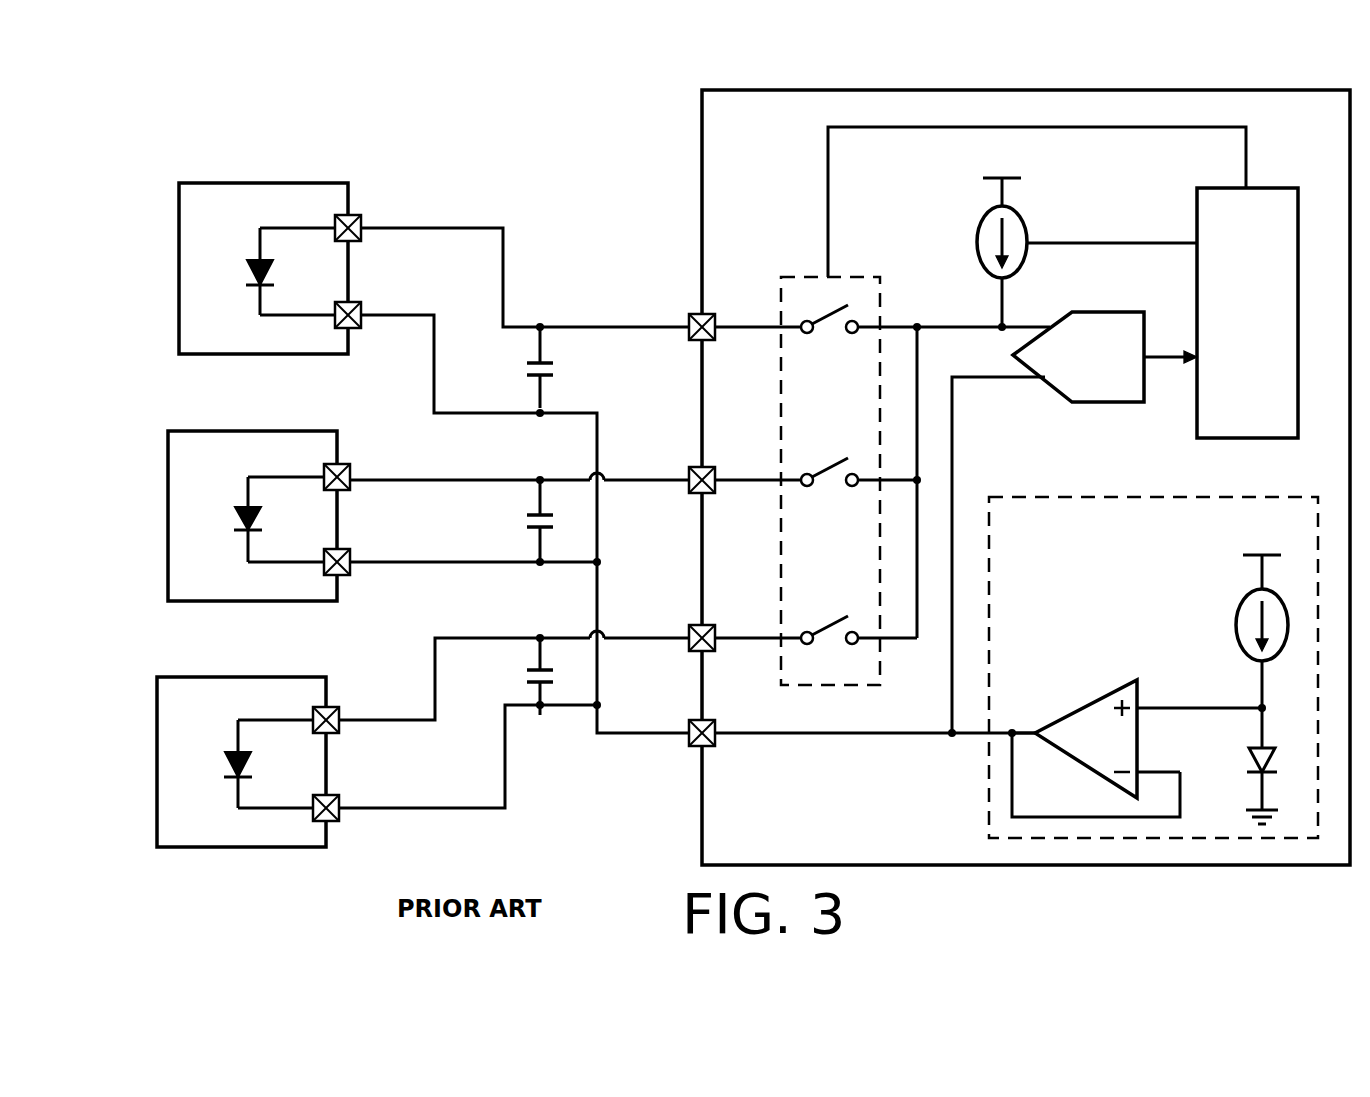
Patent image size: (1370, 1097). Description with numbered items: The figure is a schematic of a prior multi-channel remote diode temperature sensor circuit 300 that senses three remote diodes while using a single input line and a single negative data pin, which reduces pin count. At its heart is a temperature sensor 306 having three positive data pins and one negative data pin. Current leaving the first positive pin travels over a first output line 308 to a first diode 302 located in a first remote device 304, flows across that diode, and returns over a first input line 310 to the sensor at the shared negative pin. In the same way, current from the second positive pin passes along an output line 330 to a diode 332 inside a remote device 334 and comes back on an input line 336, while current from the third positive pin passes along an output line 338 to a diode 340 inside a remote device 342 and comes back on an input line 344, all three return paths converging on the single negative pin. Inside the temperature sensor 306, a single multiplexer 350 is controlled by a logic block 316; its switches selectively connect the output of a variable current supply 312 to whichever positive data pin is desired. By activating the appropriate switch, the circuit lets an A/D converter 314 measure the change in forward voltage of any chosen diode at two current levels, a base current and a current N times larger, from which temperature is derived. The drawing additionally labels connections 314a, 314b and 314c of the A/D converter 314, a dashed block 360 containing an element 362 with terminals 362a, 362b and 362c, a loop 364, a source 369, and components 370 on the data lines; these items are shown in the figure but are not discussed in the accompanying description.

The multi-channel temperature sensor circuit 300 is at (547, 96).
The first diode 302 is at (258, 262).
The first remote device 304 is at (270, 249).
The temperature sensor 306 is at (1124, 91).
The first output line 308 is at (376, 228).
The first input line 310 is at (386, 315).
The variable current supply 312 is at (988, 228).
The A/D converter 314 is at (1057, 500).
The A/D converter first input 314a is at (1050, 312).
The A/D converter second input 314b is at (1040, 383).
The A/D converter output 314c is at (1150, 352).
The logic block 316 is at (1222, 188).
The output line 330 is at (376, 478).
The diode 332 is at (246, 507).
The remote device 334 is at (259, 497).
The input line 336 is at (386, 562).
The output line 338 is at (360, 720).
The diode 340 is at (236, 752).
The remote device 342 is at (248, 743).
The input line 344 is at (370, 808).
The multiplexer 350 is at (814, 277).
The bias circuit 360 is at (1148, 497).
The operational amplifier 362 is at (1120, 690).
The amplifier inverting input 362a is at (1140, 770).
The amplifier non-inverting input 362b is at (1142, 706).
The amplifier output 362c is at (1038, 730).
The feedback line 364 is at (1085, 815).
The current source 369 is at (1245, 600).
The filter capacitor 370 is at (530, 366).